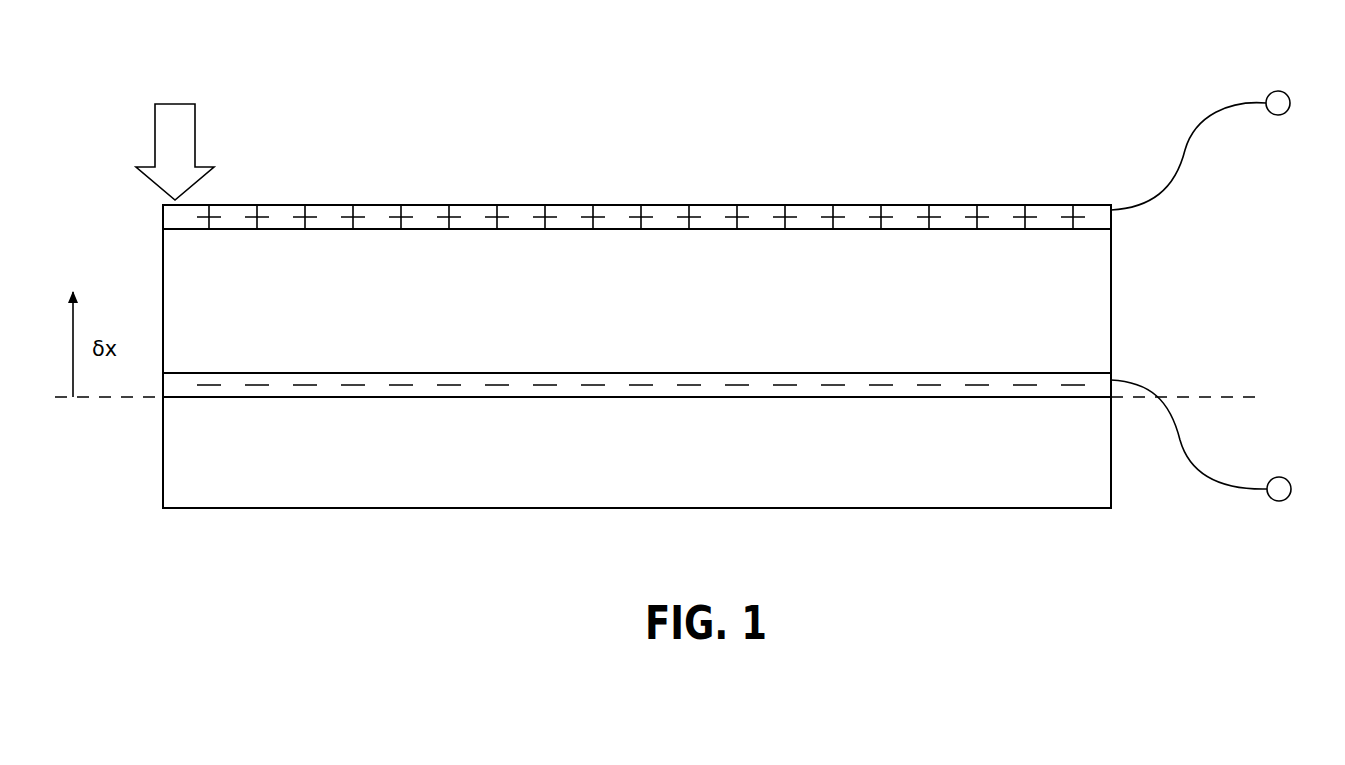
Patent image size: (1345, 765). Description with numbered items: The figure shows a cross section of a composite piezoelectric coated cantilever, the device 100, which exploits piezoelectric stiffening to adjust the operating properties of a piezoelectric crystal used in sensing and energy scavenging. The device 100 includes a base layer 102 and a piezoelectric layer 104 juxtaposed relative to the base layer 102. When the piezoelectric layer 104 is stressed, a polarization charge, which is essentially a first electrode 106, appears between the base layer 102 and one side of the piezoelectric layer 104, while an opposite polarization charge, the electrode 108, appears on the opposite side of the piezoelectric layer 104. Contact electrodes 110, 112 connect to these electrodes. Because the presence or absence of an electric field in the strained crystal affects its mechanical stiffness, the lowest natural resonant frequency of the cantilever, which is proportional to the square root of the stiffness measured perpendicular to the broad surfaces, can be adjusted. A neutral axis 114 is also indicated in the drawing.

The device 100 is at (866, 85).
The base layer 102 is at (1090, 485).
The piezoelectric layer 104 is at (1092, 315).
The first electrode 106 is at (1123, 366).
The electrode 108 is at (1124, 223).
The contact electrode 110 is at (1216, 440).
The contact electrode 112 is at (1215, 141).
The neutral axis 114 is at (103, 457).